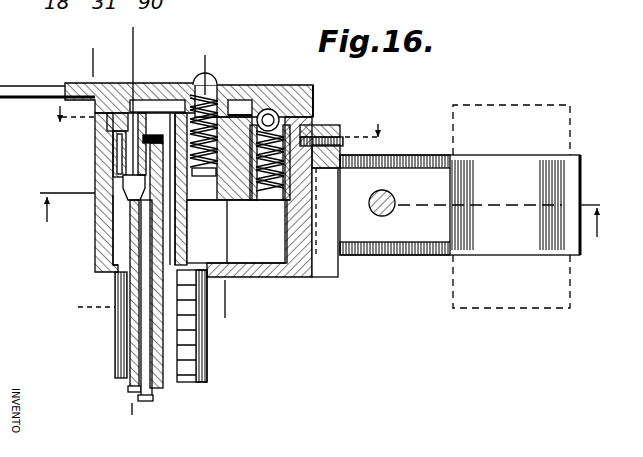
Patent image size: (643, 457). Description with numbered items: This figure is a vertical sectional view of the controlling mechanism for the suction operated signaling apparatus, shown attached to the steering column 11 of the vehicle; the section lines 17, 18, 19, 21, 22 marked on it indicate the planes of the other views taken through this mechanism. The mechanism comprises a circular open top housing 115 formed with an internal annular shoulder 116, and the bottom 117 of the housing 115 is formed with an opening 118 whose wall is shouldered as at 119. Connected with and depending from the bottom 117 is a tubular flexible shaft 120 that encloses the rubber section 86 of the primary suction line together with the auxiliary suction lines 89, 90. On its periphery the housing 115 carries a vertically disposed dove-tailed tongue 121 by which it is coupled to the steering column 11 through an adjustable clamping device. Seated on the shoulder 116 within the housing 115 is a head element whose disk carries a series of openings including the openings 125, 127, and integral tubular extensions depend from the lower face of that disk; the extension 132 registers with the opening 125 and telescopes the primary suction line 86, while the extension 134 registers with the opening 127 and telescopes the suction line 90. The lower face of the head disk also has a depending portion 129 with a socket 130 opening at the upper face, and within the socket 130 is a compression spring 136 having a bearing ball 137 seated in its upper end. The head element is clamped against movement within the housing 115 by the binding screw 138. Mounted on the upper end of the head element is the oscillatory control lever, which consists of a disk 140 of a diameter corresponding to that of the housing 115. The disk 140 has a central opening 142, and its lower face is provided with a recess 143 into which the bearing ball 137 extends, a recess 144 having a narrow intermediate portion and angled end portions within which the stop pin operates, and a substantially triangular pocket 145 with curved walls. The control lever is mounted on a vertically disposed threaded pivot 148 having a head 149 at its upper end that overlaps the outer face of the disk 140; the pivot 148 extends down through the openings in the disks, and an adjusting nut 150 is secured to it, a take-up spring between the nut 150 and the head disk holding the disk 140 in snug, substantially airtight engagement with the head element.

The steering column 11 is at (563, 127).
The section line / pin 17 is at (98, 38).
The section line 18 is at (320, 209).
The section line 19 is at (175, 50).
The section line 21 is at (87, 182).
The section line 22 is at (214, 128).
The section of primary suction line 86 is at (180, 262).
The secondary suction line 89 is at (150, 397).
The secondary suction line 90 is at (128, 172).
The housing 115 is at (97, 237).
The internal annular shoulder 116 is at (99, 205).
The bottom of housing 117 is at (284, 280).
The opening 118 is at (117, 283).
The shoulder 119 is at (100, 267).
The tubular flexible shaft 120 is at (208, 366).
The dove-tailed tongue 121 is at (323, 268).
The opening 125 is at (157, 106).
The opening 127 is at (106, 131).
The depending portion 129 is at (250, 203).
The socket 130 is at (336, 179).
The tubular extension 132 is at (113, 191).
The tubular extension 134 is at (112, 148).
The compression spring 136 is at (313, 111).
The bearing ball 137 is at (271, 107).
The binding screw 138 is at (346, 135).
The disk 140 is at (312, 89).
The opening 142 is at (152, 84).
The recess 143 is at (292, 106).
The recess 144 is at (242, 100).
The pocket 145 is at (86, 73).
The pivot 148 is at (237, 98).
The head 149 is at (196, 83).
The adjusting nut 150 is at (270, 238).